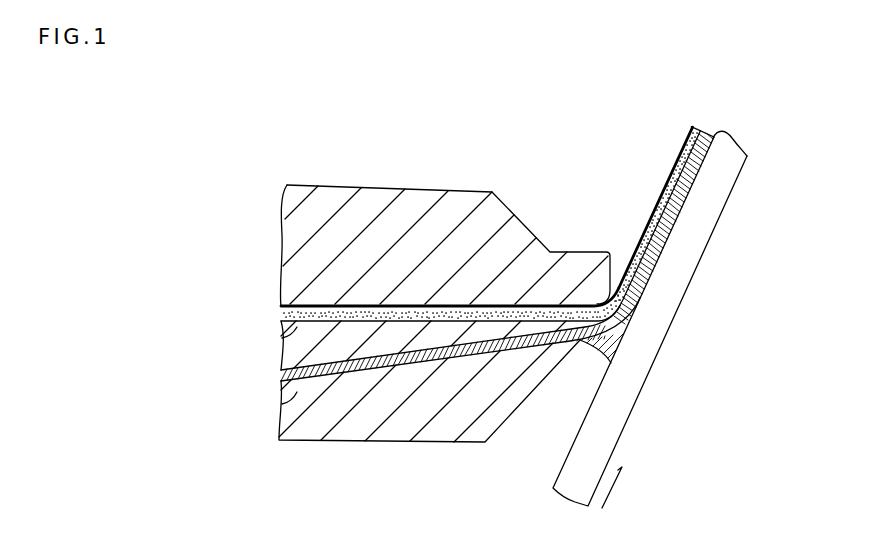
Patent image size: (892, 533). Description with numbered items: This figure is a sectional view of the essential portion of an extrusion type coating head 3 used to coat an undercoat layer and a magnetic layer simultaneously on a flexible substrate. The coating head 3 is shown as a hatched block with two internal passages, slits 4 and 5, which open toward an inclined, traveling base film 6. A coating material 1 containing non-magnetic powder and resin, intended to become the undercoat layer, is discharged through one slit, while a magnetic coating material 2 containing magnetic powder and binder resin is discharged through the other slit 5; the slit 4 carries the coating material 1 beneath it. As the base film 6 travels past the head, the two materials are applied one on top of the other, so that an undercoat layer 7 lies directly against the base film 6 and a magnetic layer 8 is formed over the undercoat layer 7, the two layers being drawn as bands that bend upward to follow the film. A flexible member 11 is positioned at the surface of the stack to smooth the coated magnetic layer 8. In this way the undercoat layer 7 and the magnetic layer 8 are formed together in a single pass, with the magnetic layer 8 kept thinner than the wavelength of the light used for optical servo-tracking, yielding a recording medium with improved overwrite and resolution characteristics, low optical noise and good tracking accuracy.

The coating material 1 is at (278, 377).
The magnetic coating material 2 is at (281, 314).
The extrusion type coating head 3 is at (413, 282).
The slit 4 is at (277, 403).
The slit 5 is at (281, 337).
The base film 6 is at (710, 223).
The undercoat layer 7 is at (712, 132).
The magnetic layer 8 is at (686, 160).
The flexible member 11 is at (636, 250).